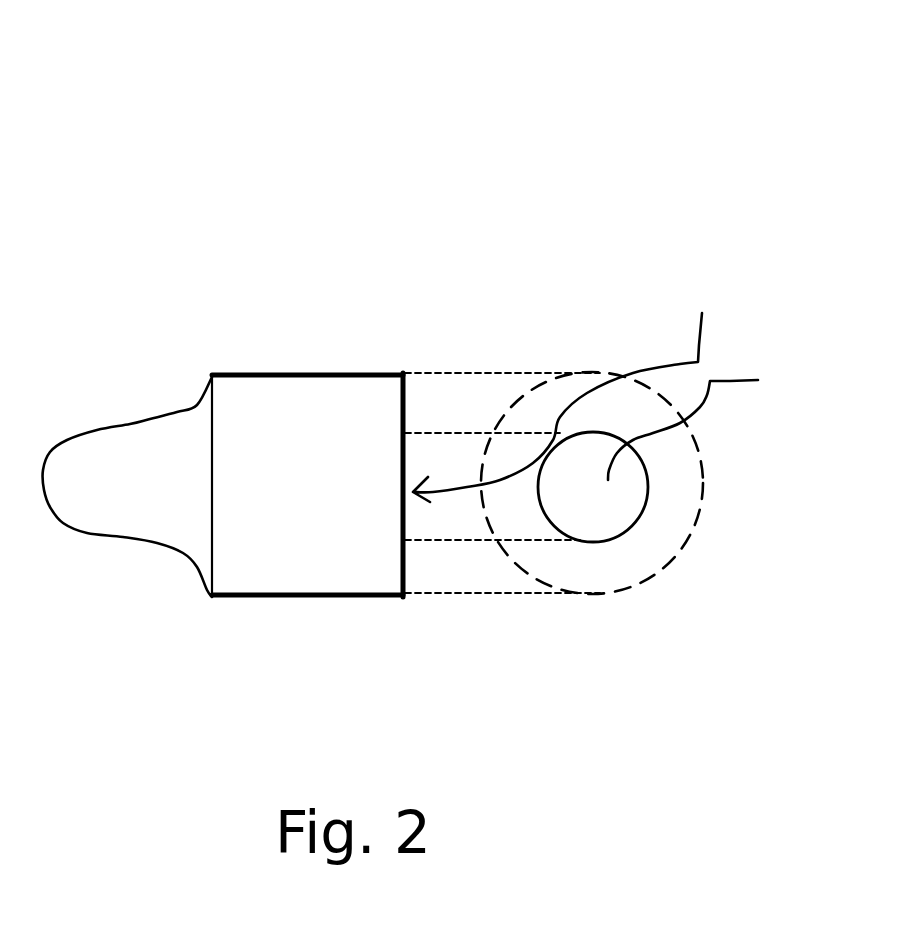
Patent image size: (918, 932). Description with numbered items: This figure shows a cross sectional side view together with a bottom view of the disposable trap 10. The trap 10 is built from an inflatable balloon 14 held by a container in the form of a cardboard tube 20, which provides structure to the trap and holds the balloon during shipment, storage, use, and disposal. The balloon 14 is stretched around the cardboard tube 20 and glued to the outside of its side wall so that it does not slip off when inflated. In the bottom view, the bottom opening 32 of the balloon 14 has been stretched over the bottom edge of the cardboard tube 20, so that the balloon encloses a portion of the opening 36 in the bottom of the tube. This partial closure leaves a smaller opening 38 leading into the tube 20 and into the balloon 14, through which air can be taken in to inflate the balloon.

The disposable trap 10 is at (453, 118).
The balloon 14 is at (130, 425).
The cardboard tube 20 is at (253, 427).
The bottom opening 32 is at (402, 513).
The opening 36 is at (673, 513).
The smaller opening 38 is at (614, 378).